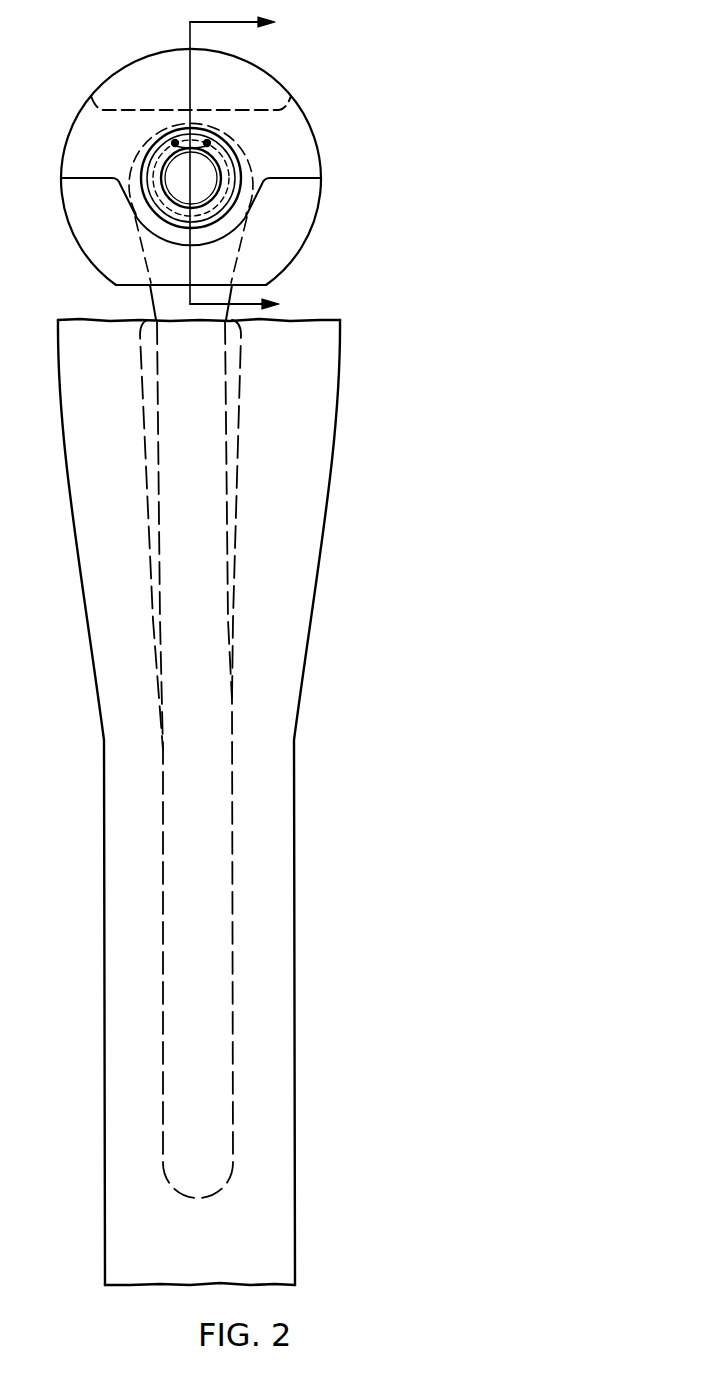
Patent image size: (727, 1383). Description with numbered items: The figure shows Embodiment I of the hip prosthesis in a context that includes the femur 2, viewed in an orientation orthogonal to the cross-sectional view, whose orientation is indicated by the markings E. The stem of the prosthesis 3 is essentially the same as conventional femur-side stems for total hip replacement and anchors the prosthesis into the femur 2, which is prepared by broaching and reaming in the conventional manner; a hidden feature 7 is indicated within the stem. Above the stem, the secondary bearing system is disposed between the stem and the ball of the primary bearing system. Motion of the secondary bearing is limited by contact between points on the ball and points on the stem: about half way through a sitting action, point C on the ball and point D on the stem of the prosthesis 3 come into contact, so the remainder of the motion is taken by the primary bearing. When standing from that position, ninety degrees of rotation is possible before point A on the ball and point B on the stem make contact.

The femur 2 is at (333, 433).
The stem of the prosthesis 3 is at (150, 305).
The hidden bore / slot in stem 7 is at (230, 882).
The point A on the ball A is at (114, 186).
The point B on the stem of the prosthesis B is at (135, 245).
The point C on the ball C is at (269, 184).
The point D on the stem of the prosthesis D is at (243, 245).
The markings E is at (245, 164).